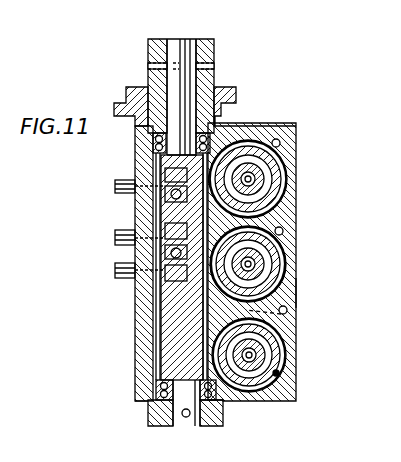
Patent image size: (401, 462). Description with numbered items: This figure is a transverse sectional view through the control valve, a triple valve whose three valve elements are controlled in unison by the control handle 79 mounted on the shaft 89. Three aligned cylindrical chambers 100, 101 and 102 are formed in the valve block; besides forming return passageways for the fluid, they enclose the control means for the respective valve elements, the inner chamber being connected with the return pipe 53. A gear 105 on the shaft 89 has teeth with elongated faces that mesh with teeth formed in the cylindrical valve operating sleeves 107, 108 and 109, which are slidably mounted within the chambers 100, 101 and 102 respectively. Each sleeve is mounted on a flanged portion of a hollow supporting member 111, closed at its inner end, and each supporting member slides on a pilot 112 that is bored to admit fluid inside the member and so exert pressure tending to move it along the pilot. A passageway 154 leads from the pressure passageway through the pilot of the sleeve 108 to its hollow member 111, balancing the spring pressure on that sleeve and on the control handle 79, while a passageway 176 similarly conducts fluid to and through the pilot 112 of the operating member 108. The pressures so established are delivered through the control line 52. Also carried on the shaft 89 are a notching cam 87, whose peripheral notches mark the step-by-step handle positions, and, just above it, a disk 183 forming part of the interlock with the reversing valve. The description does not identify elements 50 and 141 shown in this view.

The shaft 89 is at (171, 35).
The control handle 79 is at (206, 39).
The notching cam 87 is at (112, 113).
The disk 183 is at (130, 79).
The roller housing 141 is at (277, 118).
The cylindrical chamber 100 is at (286, 143).
The valve operating sleeve 107 is at (288, 161).
The pilot 112 is at (248, 176).
The hollow supporting member 111 is at (246, 181).
The passageway 154 is at (276, 226).
The valve operating sleeve 108 is at (252, 265).
The cylindrical chamber 101 is at (279, 284).
The passageway 176 is at (279, 303).
The valve operating sleeve 109 is at (273, 306).
The cylindrical chamber 102 is at (272, 365).
The first port 50 is at (127, 182).
The control line 52 is at (128, 236).
The return pipe 53 is at (107, 265).
The gear 105 is at (152, 333).